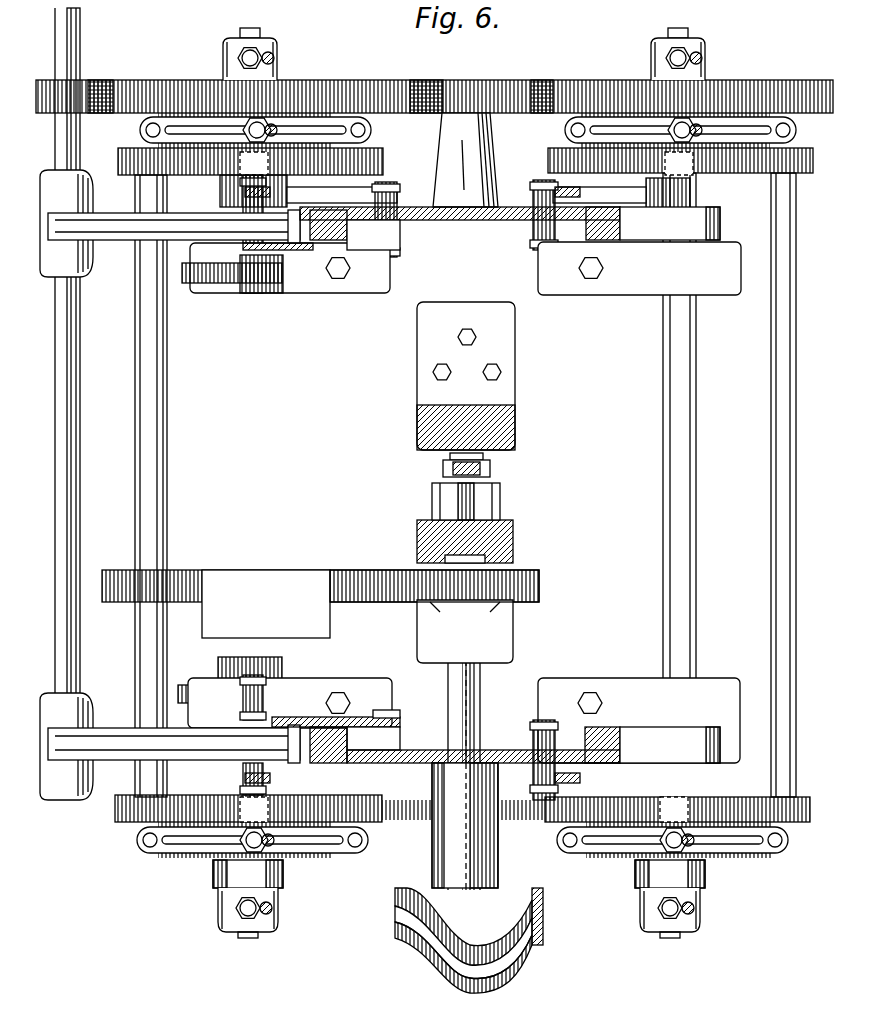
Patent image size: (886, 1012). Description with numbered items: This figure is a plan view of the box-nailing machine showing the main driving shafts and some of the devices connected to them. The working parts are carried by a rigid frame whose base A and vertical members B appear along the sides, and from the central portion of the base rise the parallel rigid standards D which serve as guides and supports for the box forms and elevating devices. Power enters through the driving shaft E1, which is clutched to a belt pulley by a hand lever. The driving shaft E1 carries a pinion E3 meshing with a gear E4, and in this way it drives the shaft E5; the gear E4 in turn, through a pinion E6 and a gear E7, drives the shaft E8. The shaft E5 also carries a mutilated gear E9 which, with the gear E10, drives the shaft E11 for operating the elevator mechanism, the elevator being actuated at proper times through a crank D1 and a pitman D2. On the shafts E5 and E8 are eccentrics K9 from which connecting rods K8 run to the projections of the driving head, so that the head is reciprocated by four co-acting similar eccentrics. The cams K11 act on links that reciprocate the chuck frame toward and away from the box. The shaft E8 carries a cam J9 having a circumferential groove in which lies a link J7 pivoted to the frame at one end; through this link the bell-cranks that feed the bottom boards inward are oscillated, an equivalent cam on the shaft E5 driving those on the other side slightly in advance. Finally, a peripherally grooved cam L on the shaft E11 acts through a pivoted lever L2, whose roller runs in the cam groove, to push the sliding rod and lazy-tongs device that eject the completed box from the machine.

The pinion E3 is at (86, 94).
The gear E4 is at (168, 82).
The pinion E6 is at (458, 82).
The gear E7 is at (562, 82).
The eccentric K9 is at (373, 135).
The connecting rod K8 is at (628, 866).
The cam J9 is at (813, 163).
The driving shaft E1 is at (72, 447).
The shaft E5 is at (266, 455).
The mutilated gear E9 is at (180, 570).
The shaft E8 is at (690, 428).
The standard D is at (512, 447).
The pitman D2 is at (443, 469).
The crank D1 is at (480, 510).
The gear E10 is at (540, 588).
The base A is at (756, 485).
The cam K11 is at (180, 692).
The shaft E11 is at (478, 712).
The vertical member B is at (617, 753).
The link J7 is at (588, 779).
The pivoted lever L2 is at (545, 930).
The cam L is at (480, 985).